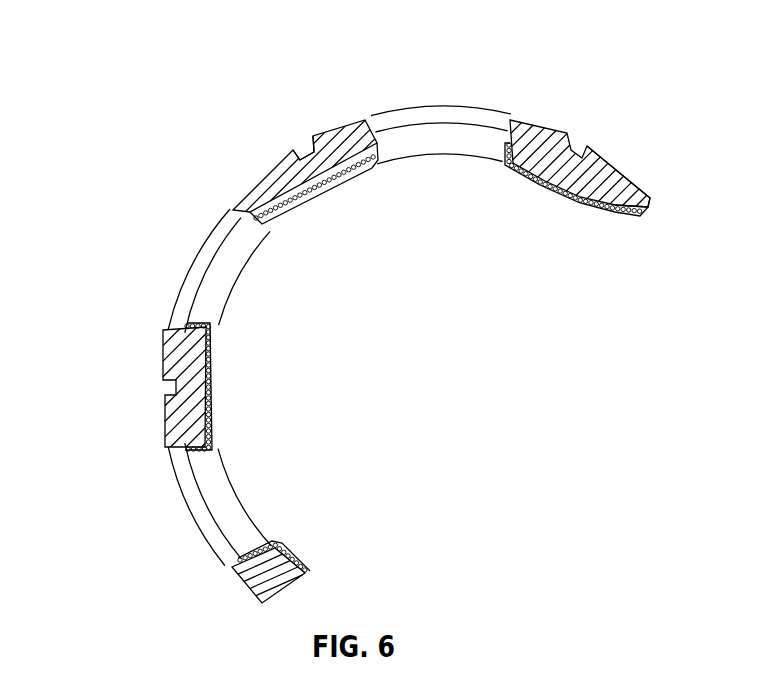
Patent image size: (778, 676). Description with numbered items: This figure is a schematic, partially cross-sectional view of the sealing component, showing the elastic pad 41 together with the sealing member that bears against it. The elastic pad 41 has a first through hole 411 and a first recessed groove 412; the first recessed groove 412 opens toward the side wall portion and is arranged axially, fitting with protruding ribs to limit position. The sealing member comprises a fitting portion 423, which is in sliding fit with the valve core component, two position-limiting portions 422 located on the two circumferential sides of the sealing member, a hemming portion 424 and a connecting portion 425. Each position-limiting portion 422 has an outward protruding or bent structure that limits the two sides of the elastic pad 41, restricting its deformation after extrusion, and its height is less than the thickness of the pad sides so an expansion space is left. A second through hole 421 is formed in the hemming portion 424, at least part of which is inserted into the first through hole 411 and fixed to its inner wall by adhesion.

The elastic pad 41 is at (333, 152).
The first through hole 411 is at (217, 237).
The first recessed groove 412 is at (172, 389).
The second through hole 421 is at (222, 275).
The position-limiting portion 422 is at (633, 217).
The fitting portion 423 is at (543, 178).
The hemming portion 424 is at (371, 138).
The connecting portion 425 is at (505, 158).